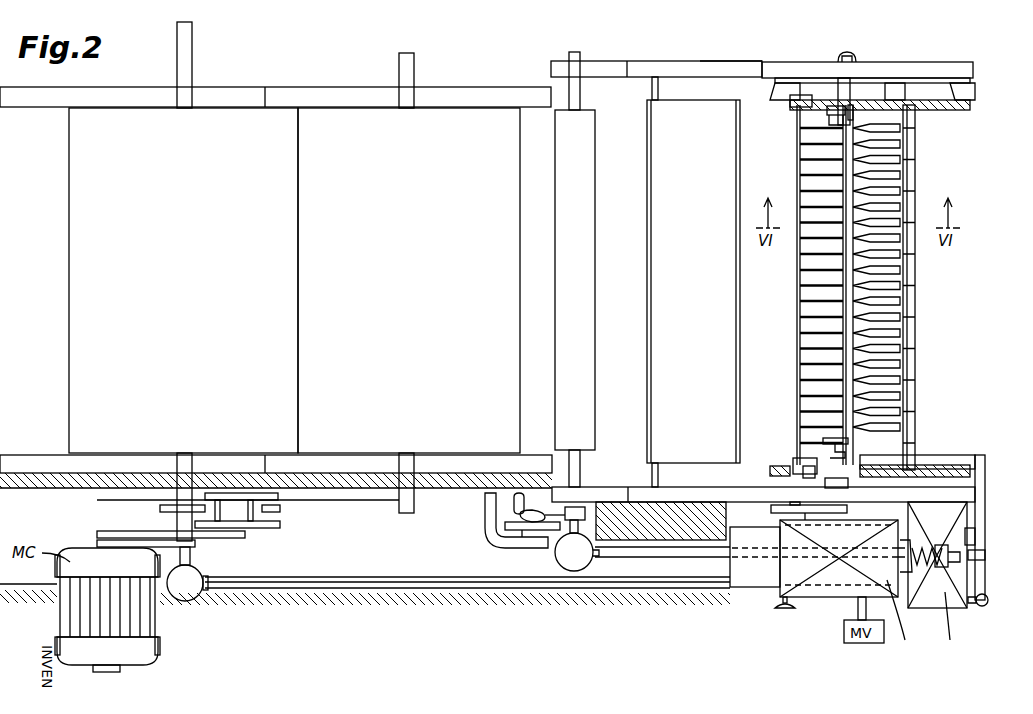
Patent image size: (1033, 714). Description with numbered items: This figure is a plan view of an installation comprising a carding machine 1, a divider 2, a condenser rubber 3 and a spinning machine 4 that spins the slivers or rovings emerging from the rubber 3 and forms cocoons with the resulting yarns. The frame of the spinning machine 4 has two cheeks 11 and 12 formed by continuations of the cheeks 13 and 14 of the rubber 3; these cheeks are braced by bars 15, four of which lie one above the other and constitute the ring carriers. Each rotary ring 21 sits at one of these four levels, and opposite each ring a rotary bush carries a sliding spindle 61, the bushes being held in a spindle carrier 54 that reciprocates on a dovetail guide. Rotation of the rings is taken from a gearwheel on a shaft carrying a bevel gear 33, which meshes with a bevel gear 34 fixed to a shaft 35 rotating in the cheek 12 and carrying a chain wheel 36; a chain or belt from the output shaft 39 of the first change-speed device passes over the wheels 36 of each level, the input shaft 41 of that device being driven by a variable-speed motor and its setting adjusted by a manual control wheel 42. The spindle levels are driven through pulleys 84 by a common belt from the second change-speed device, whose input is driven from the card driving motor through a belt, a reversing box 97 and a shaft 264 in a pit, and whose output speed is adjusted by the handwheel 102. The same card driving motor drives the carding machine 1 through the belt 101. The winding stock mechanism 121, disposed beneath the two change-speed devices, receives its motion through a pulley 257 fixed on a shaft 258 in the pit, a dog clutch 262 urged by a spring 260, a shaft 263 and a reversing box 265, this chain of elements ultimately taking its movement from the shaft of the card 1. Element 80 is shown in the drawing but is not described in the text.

The carding machine 1 is at (276, 81).
The divider 2 is at (607, 145).
The condenser rubber 3 is at (698, 60).
The cheek of the rubber 13 is at (741, 63).
The spinning machine for the production of cocoons 4 is at (923, 62).
The cheek 11 is at (967, 70).
The spindle 61 is at (822, 132).
The rotary ring 21 is at (841, 110).
The bar 15 is at (855, 328).
The spindle carrier 54 is at (902, 280).
The bevel gear 33 is at (823, 440).
The bevel gear 34 is at (834, 452).
The shaft 35 is at (848, 480).
The chain wheel 36 is at (840, 492).
The cheek 12 is at (930, 490).
The mounting bar 80 is at (950, 488).
The cheek of the rubber 14 is at (753, 492).
The pulley 84 is at (985, 478).
The output shaft 39 is at (772, 509).
The winding stock mechanism 121 is at (728, 562).
The input shaft 41 is at (858, 608).
The manual control wheel 42 is at (785, 609).
The spring 260 is at (933, 573).
The dog clutch 262 is at (952, 562).
The shaft 258 is at (978, 545).
The pulley 257 is at (986, 555).
The handwheel 102 is at (989, 601).
The shaft 263 is at (665, 553).
The shaft 264 is at (572, 584).
The reversing box 265 is at (566, 558).
The belt 101 is at (135, 531).
The reversing box 97 is at (203, 572).